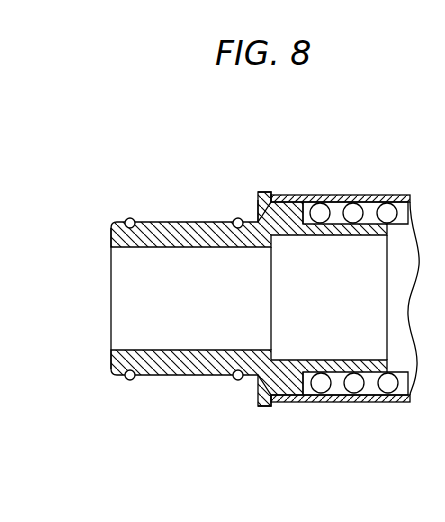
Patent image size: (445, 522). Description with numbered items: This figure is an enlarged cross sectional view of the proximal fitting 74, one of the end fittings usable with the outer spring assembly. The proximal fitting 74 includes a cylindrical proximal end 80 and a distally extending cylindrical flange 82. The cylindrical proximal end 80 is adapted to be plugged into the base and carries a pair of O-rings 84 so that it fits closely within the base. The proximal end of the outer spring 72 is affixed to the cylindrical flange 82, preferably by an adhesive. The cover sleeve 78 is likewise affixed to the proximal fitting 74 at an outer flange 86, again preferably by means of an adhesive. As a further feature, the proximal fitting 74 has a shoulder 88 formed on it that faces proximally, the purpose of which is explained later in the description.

The outer spring 72 is at (323, 386).
The proximal fitting 74 is at (226, 124).
The cover sleeve 78 is at (384, 196).
The cylindrical proximal end 80 is at (114, 364).
The cylindrical flange 82 is at (358, 386).
The O-rings 84 is at (126, 219).
The outer flange 86 is at (290, 214).
The shoulder 88 is at (257, 212).